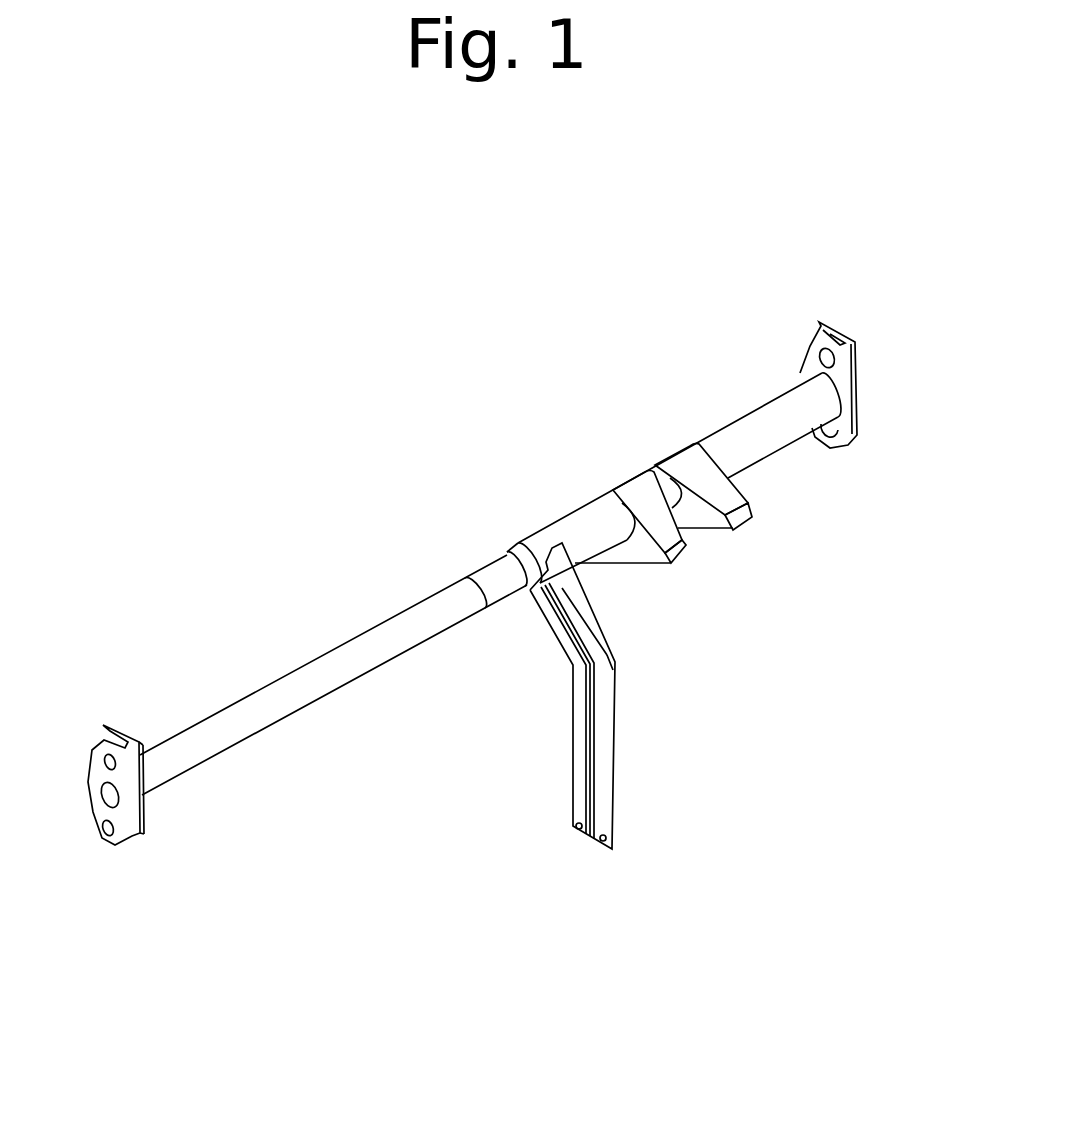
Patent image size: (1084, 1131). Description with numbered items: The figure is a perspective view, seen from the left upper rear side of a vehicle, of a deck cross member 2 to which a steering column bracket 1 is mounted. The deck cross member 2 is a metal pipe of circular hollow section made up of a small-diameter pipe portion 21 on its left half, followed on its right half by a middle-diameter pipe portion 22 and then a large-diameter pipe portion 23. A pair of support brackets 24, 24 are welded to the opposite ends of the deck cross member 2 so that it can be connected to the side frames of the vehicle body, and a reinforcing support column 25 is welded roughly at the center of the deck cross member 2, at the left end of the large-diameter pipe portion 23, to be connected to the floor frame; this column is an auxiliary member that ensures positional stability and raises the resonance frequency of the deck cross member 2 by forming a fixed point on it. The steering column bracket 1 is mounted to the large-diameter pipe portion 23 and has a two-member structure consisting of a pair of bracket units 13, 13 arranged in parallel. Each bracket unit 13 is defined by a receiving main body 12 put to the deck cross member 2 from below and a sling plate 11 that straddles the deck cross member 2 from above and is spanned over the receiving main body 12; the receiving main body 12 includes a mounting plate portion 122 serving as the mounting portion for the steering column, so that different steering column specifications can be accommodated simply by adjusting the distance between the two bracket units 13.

The steering column bracket 1 is at (567, 321).
The deck cross member 2 is at (286, 666).
The sling plate 11 is at (617, 520).
The receiving main body 12 is at (647, 565).
The bracket unit 13 is at (603, 491).
The small-diameter pipe portion 21 is at (303, 700).
The middle-diameter pipe portion 22 is at (493, 568).
The large-diameter pipe portion 23 is at (767, 437).
The support bracket 24 is at (125, 835).
The reinforcing support column 25 is at (577, 800).
The bottom tab 122 is at (627, 555).